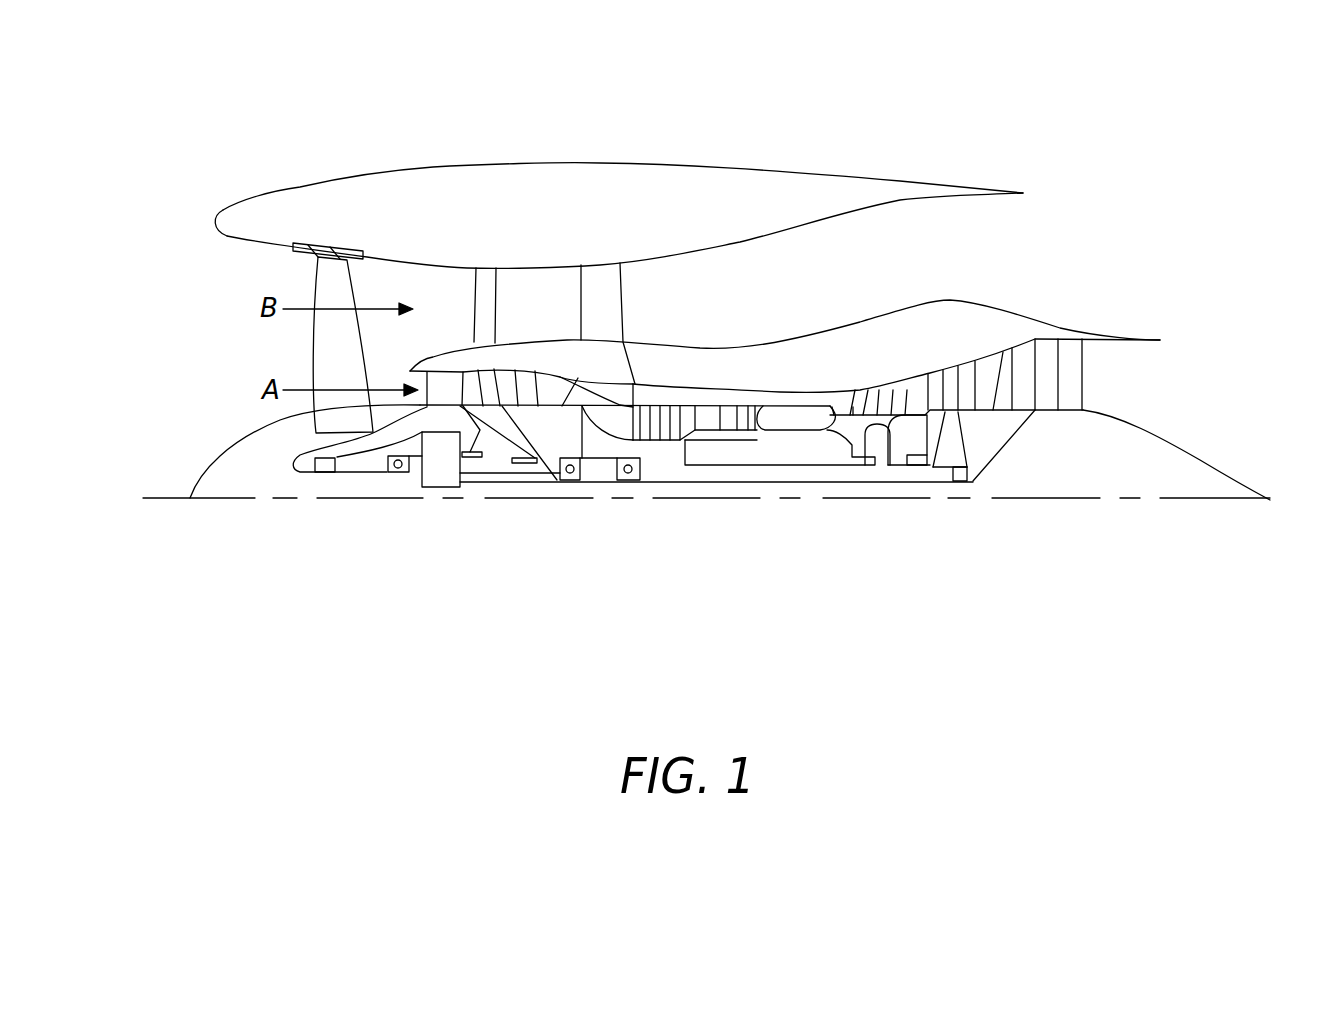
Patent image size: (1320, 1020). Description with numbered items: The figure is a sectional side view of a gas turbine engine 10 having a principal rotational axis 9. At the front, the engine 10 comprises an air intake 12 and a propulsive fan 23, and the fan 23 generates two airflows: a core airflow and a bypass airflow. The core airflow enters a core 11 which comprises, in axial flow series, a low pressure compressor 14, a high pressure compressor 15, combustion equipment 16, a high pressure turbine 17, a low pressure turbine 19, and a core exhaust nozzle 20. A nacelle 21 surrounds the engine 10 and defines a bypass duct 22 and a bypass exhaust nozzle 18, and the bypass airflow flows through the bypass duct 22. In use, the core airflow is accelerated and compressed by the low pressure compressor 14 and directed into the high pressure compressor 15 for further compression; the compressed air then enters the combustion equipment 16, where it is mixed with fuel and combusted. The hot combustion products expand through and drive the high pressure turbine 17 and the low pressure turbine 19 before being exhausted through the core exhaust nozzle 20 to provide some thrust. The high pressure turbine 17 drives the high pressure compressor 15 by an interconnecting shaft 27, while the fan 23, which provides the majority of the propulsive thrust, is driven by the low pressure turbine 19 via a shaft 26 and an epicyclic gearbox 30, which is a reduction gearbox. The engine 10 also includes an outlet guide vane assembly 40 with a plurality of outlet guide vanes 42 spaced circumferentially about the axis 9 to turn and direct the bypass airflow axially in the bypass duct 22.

The principal rotational axis 9 is at (1019, 502).
The gas turbine engine 10 is at (233, 137).
The core 11 is at (766, 364).
The air intake 12 is at (252, 282).
The low pressure compressor 14 is at (527, 380).
The high pressure compressor 15 is at (705, 420).
The combustion equipment 16 is at (800, 420).
The high pressure turbine 17 is at (877, 400).
The bypass exhaust nozzle 18 is at (1025, 244).
The low pressure turbine 19 is at (1047, 362).
The core exhaust nozzle 20 is at (1130, 378).
The nacelle 21 is at (597, 183).
The bypass duct 22 is at (956, 261).
The propulsive fan 23 is at (325, 345).
The shaft 26 is at (702, 484).
The interconnecting shaft 27 is at (753, 471).
The epicyclic gearbox 30 is at (437, 473).
The outlet guide vane assembly 40 is at (462, 300).
The outlet guide vanes 42 is at (490, 279).